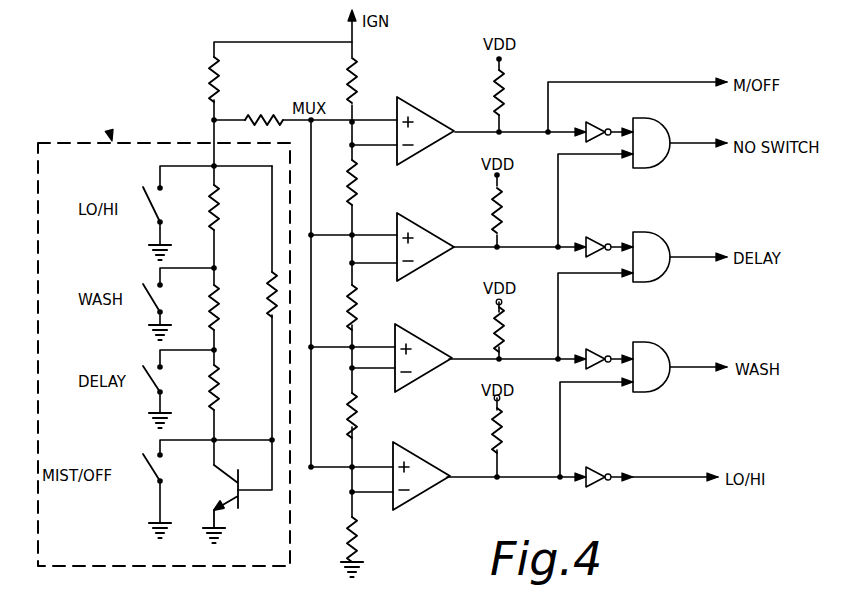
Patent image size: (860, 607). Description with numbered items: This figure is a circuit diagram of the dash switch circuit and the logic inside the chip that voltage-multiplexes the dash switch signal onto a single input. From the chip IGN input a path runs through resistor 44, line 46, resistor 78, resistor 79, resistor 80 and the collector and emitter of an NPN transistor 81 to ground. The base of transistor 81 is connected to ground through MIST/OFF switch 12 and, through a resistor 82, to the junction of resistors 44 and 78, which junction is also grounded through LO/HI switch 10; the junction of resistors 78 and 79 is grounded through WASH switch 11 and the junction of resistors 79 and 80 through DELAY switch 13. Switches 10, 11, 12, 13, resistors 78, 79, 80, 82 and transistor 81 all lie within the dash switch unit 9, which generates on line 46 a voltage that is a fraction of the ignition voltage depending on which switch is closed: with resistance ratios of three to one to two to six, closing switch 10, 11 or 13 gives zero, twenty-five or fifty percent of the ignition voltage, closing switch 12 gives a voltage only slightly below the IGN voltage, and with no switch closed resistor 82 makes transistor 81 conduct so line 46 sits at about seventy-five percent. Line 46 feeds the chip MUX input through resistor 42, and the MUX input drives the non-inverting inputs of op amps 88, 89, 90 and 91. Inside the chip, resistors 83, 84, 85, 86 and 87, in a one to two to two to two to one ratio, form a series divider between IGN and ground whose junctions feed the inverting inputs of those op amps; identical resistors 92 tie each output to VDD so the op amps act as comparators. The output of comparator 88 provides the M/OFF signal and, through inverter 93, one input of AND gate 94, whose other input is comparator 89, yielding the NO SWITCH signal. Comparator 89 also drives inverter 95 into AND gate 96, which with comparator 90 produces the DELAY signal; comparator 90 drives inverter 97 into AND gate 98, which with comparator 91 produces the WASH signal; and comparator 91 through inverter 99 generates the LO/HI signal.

The dash switch unit 9 is at (112, 138).
The LO/HI switch 10 is at (148, 187).
The WASH switch 11 is at (148, 284).
The MIST/OFF switch 12 is at (148, 454).
The DELAY switch 13 is at (148, 366).
The resistor 42 is at (256, 118).
The resistor 44 is at (208, 78).
The line 46 is at (212, 132).
The resistor 78 is at (220, 205).
The resistor 79 is at (216, 302).
The resistor 80 is at (222, 388).
The NPN transistor 81 is at (226, 478).
The resistor 82 is at (268, 290).
The resistor 83 is at (360, 92).
The resistor 84 is at (362, 176).
The resistor 85 is at (360, 288).
The resistor 86 is at (360, 398).
The resistor 87 is at (362, 532).
The comparator 88 is at (418, 126).
The comparator 89 is at (418, 246).
The comparator 90 is at (424, 352).
The comparator 91 is at (422, 462).
The resistor 92 is at (505, 98).
The inverter 93 is at (595, 124).
The AND gate 94 is at (650, 158).
The inverter 95 is at (595, 239).
The AND gate 96 is at (650, 270).
The inverter 97 is at (612, 330).
The AND gate 98 is at (647, 392).
The inverter 99 is at (598, 488).